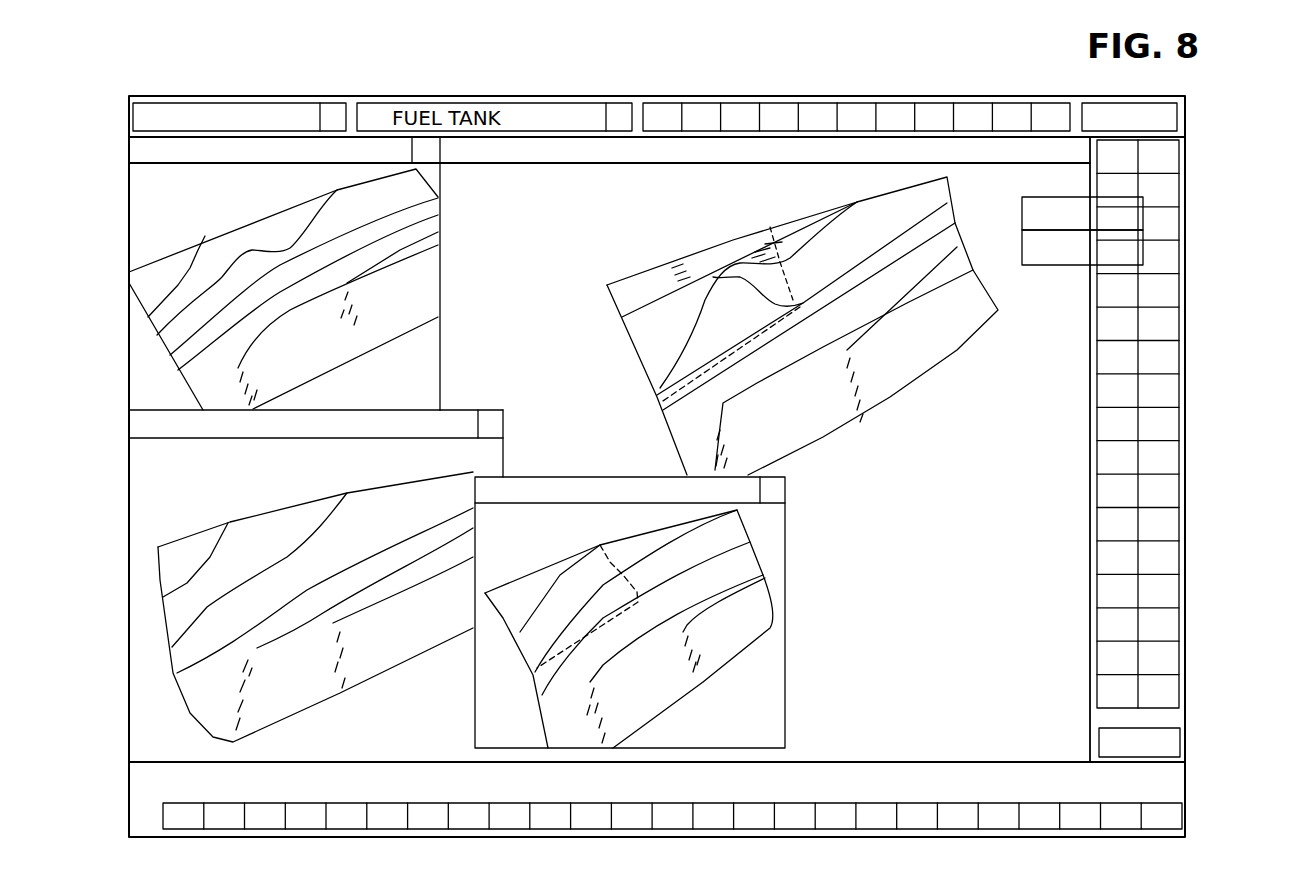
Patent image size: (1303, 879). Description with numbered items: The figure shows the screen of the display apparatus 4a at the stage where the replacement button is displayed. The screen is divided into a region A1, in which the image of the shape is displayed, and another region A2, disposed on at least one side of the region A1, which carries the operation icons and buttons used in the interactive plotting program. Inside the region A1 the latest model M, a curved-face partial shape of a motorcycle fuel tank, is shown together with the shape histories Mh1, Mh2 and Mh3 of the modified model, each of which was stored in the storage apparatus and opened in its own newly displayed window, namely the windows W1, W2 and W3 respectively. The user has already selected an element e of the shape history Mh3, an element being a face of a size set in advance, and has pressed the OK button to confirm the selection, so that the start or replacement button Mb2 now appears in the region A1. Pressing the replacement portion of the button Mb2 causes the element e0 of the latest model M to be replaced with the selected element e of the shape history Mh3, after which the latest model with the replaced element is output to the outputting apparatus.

The display apparatus 4a is at (1197, 463).
The region for displaying an image of a shape A1 is at (1036, 728).
The region including operation icons and buttons A2 is at (1161, 783).
The start or replacement button Mb2 is at (1050, 265).
The window W1 is at (430, 360).
The window W2 is at (495, 455).
The window W3 is at (777, 538).
The shape history Mh1 is at (428, 265).
The shape history Mh2 is at (293, 707).
The shape history Mh3 is at (630, 629).
The latest model M is at (802, 326).
The element of the latest model e0 is at (715, 255).
The element of the shape history e is at (552, 575).